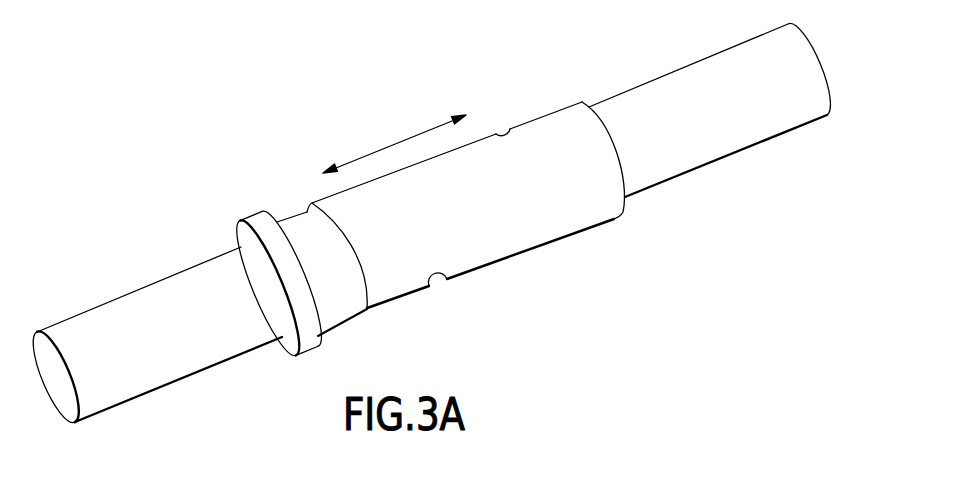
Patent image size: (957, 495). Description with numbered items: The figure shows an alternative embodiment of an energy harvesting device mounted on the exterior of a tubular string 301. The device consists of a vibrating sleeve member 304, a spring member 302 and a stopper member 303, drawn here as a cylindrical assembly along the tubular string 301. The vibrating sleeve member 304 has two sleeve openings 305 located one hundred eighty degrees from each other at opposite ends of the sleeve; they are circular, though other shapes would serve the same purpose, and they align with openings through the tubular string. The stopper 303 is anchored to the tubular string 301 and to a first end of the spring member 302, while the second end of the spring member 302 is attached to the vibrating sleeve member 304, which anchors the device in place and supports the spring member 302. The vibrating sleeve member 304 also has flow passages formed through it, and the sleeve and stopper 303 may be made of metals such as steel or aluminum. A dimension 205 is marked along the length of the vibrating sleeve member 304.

The tubular string 301 is at (133, 390).
The spring member 302 is at (332, 317).
The stopper member 303 is at (252, 220).
The vibrating sleeve member 304 is at (455, 226).
The sleeve openings 305 is at (509, 115).
The length dimension 205 is at (407, 141).